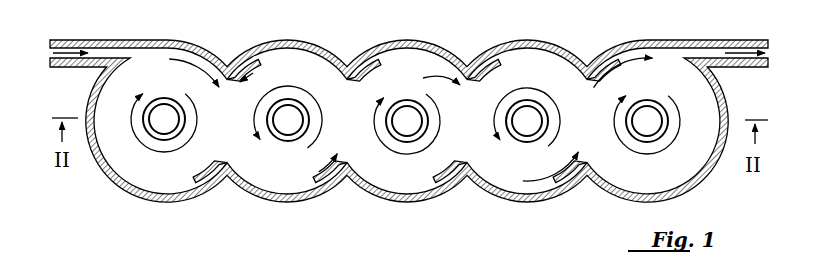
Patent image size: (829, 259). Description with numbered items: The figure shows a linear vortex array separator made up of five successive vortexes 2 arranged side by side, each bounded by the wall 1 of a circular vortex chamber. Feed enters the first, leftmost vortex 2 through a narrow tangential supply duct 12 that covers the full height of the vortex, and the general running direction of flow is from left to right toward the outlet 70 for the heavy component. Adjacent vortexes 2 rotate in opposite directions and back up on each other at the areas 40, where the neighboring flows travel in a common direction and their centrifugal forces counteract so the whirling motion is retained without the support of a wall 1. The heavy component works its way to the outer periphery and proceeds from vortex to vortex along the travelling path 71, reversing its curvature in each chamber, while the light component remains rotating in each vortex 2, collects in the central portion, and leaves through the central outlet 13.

The wall of a vortex chamber 1 is at (184, 188).
The vortex 2 is at (137, 128).
The tangential supply duct 12 is at (76, 68).
The outlet for a light component 13 is at (165, 112).
The area where adjacent vortexes back up on each other 40 is at (229, 126).
The outlet for a heavy component 70 is at (755, 68).
The travelling path of a heavy component 71 is at (633, 73).